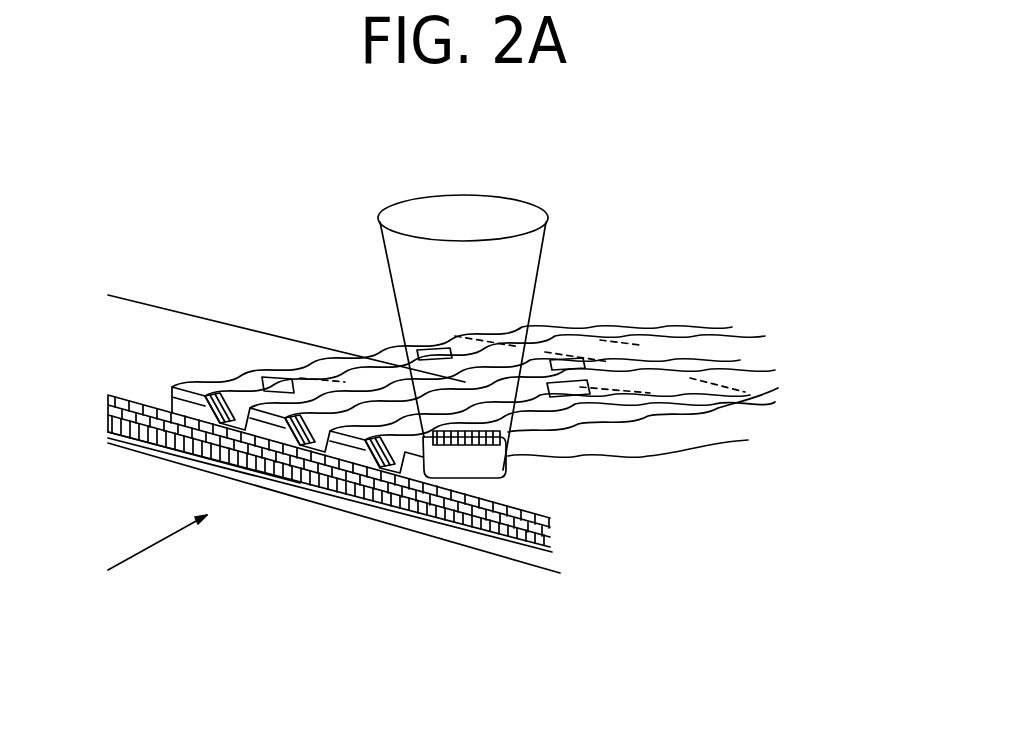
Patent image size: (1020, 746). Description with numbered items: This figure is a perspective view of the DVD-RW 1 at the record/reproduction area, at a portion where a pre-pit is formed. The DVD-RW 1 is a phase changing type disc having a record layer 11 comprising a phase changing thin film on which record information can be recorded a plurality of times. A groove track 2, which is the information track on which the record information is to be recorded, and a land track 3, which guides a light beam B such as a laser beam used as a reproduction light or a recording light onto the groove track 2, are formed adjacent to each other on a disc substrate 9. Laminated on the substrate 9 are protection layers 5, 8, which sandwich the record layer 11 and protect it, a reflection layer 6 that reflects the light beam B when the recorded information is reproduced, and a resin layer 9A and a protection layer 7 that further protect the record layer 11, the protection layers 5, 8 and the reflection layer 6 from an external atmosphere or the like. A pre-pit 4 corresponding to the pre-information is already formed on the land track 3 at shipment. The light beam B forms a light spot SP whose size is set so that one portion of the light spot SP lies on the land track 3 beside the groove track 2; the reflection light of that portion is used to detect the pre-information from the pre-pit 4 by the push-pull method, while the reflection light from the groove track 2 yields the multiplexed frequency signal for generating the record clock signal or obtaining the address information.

The DVD-RW 1 is at (738, 568).
The groove track 2 is at (273, 393).
The land track 3 is at (235, 423).
The pre-pit 4 is at (326, 380).
The protection layer 5 is at (552, 517).
The reflection layer 6 is at (372, 490).
The protection layer 7 is at (180, 333).
The protection layer 8 is at (552, 536).
The disc substrate 9 is at (132, 453).
The resin layer 9A is at (107, 427).
The record layer 11 is at (482, 508).
The light spot SP is at (564, 456).
The light beam B is at (548, 240).